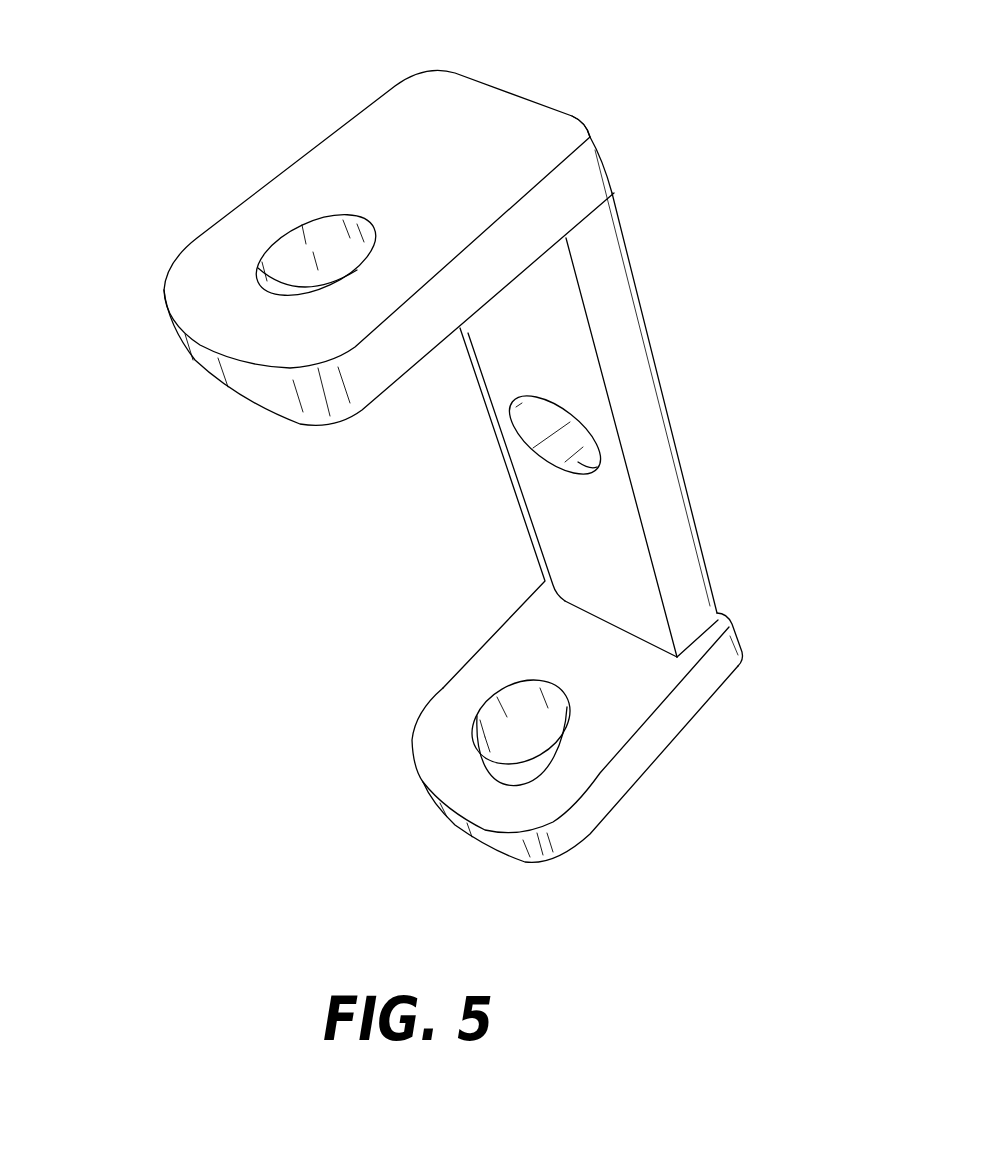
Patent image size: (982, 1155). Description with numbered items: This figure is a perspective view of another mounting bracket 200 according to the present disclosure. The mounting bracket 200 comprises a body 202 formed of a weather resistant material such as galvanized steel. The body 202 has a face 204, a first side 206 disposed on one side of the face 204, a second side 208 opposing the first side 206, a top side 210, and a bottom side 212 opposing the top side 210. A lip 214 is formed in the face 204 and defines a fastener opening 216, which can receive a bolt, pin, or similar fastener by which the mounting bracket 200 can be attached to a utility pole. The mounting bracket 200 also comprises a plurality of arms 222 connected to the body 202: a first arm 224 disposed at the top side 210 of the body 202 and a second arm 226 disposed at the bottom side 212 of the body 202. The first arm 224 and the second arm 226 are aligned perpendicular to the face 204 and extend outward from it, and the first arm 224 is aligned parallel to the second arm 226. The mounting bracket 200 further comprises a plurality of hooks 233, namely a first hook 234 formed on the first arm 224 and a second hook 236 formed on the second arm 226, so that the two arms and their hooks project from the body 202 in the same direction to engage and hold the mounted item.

The mounting bracket 200 is at (668, 110).
The body 202 is at (688, 365).
The face 204 is at (632, 568).
The first side 206 is at (478, 382).
The second side 208 is at (667, 500).
The top side 210 is at (548, 120).
The bottom side 212 is at (725, 680).
The lip 214 is at (597, 467).
The fastener opening 216 is at (525, 425).
The plurality of arms 222 is at (172, 403).
The first arm 224 is at (355, 140).
The second arm 226 is at (643, 774).
The plurality of hooks 233 is at (596, 857).
The first hook 234 is at (257, 266).
The second hook 236 is at (478, 723).